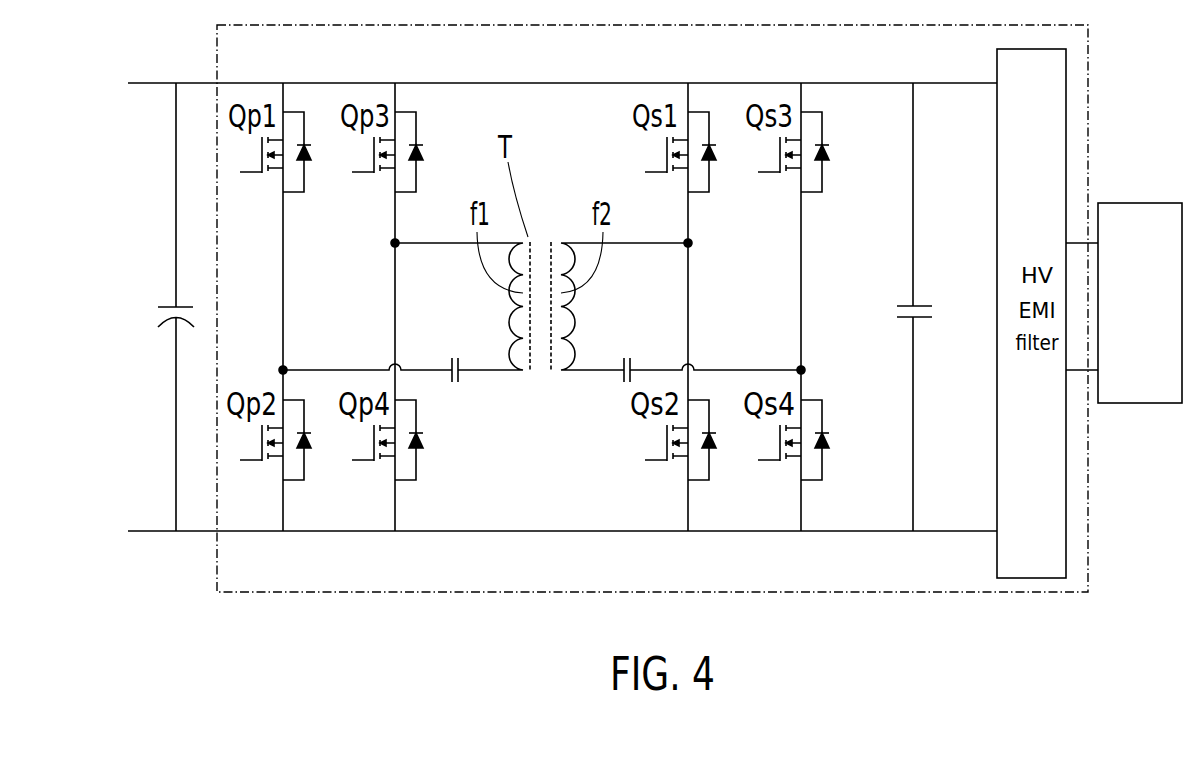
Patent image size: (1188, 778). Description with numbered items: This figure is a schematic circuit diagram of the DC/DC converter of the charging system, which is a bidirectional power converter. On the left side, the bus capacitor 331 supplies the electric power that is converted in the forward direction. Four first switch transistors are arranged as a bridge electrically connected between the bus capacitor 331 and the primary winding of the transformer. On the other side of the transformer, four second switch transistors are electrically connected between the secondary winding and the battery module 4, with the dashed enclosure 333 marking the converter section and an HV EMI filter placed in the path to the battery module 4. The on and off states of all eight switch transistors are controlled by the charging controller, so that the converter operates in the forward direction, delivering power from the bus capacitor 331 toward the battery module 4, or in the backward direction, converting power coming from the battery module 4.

The bus capacitor 331 is at (170, 303).
The AC/DC converter 333 is at (1088, 85).
The battery module 4 is at (1142, 203).